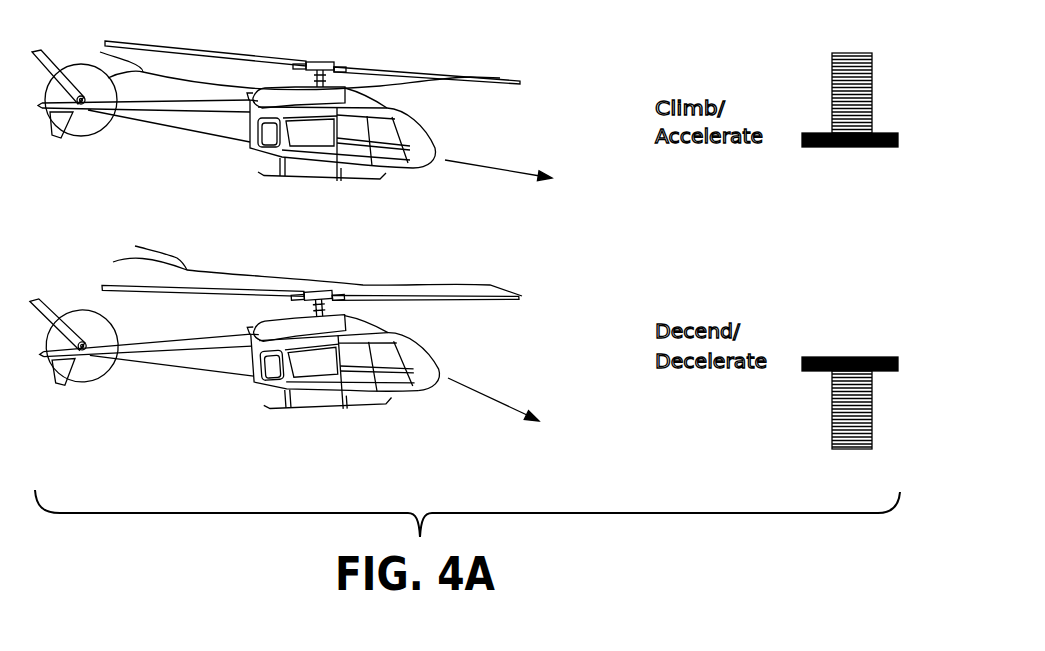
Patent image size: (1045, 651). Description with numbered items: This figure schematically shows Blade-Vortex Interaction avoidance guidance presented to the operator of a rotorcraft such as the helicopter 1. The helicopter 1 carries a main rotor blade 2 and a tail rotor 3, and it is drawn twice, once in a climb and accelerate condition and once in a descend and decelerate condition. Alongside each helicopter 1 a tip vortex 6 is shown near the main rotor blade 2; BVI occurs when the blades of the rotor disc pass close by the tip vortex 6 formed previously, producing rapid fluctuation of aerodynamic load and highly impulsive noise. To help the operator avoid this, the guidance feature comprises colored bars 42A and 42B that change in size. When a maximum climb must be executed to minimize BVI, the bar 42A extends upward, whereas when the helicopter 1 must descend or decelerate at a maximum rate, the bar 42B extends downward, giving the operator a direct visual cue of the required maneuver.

The helicopter 1 is at (238, 142).
The main rotor blade 2 is at (383, 72).
The tail rotor 3 is at (92, 138).
The tip vortex 6 is at (100, 52).
The colored bar 42A is at (885, 102).
The colored bar 42B is at (885, 402).